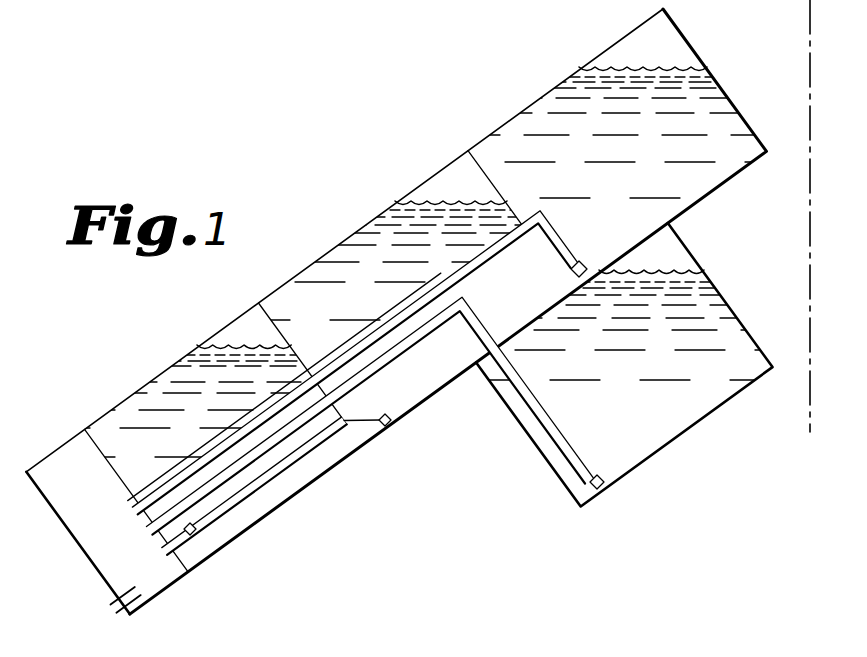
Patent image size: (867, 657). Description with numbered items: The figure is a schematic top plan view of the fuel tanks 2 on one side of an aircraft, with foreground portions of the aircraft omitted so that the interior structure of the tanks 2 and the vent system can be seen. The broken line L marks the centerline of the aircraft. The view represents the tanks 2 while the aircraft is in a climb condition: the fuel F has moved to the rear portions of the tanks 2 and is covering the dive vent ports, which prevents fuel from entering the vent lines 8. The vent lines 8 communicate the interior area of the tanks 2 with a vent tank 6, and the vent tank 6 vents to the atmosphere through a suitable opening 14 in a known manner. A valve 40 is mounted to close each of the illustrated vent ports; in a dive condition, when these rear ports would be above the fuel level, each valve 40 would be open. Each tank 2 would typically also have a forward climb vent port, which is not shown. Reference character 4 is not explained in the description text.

The fuel tank 2 is at (538, 98).
The liquid surface 4 is at (663, 49).
The vent tank 6 is at (56, 452).
The vent line 8 is at (338, 359).
The opening 14 is at (121, 616).
The valve 40 is at (590, 260).
The fuel F is at (725, 121).
The centerline L is at (810, 268).